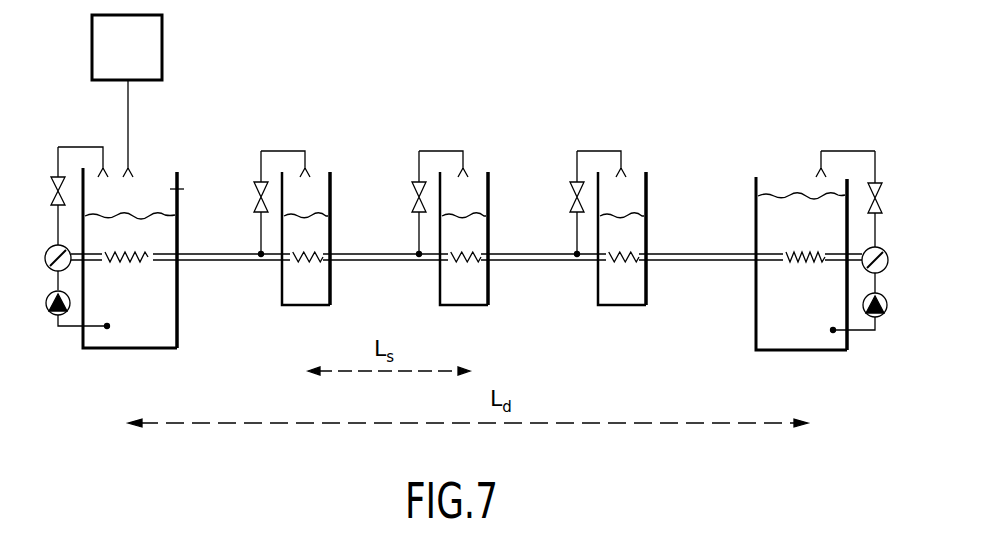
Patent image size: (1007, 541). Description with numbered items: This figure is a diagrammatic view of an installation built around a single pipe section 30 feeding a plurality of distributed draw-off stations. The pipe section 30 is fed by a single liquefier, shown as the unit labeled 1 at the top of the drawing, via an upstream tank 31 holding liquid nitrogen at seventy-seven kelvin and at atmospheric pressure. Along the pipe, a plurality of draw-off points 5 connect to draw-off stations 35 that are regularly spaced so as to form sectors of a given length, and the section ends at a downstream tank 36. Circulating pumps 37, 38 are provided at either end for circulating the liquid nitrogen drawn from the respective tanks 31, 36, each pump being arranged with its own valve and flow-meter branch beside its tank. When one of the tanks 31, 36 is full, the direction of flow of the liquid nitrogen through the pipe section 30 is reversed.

The laser source L1 1 is at (163, 45).
The draw-off points 5 is at (256, 264).
The single pipe section 30 is at (218, 250).
The upstream tank 31 is at (177, 190).
The draw-off stations 35 is at (330, 190).
The downstream tank 36 is at (765, 220).
The circulating pump 37 is at (47, 312).
The circulating pump 38 is at (887, 315).